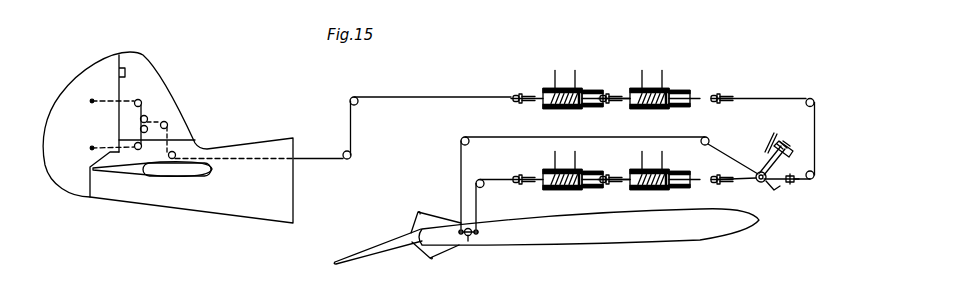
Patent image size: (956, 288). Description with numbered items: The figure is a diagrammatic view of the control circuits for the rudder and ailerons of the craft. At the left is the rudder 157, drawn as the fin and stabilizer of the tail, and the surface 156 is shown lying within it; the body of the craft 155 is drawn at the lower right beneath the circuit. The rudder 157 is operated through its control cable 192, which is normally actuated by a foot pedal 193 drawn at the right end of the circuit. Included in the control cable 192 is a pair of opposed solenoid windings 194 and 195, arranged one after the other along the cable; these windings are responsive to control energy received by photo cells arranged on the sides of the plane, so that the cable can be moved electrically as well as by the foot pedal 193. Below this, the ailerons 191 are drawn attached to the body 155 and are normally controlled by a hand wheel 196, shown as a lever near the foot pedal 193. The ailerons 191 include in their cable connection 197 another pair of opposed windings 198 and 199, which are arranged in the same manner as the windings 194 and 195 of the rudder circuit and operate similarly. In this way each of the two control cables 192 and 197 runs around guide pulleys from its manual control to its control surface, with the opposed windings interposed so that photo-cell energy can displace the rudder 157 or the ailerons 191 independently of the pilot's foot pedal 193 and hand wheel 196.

The fuselage 155 is at (677, 235).
The elevator 156 is at (132, 168).
The rudder 157 is at (72, 88).
The ailerons 191 is at (365, 250).
The control cable 192 is at (446, 97).
The foot pedal 193 is at (780, 187).
The solenoid winding 194 is at (568, 88).
The solenoid winding 195 is at (667, 88).
The hand wheel 196 is at (768, 138).
The cable connection 197 is at (523, 138).
The solenoid winding 198 is at (575, 171).
The solenoid winding 199 is at (675, 171).